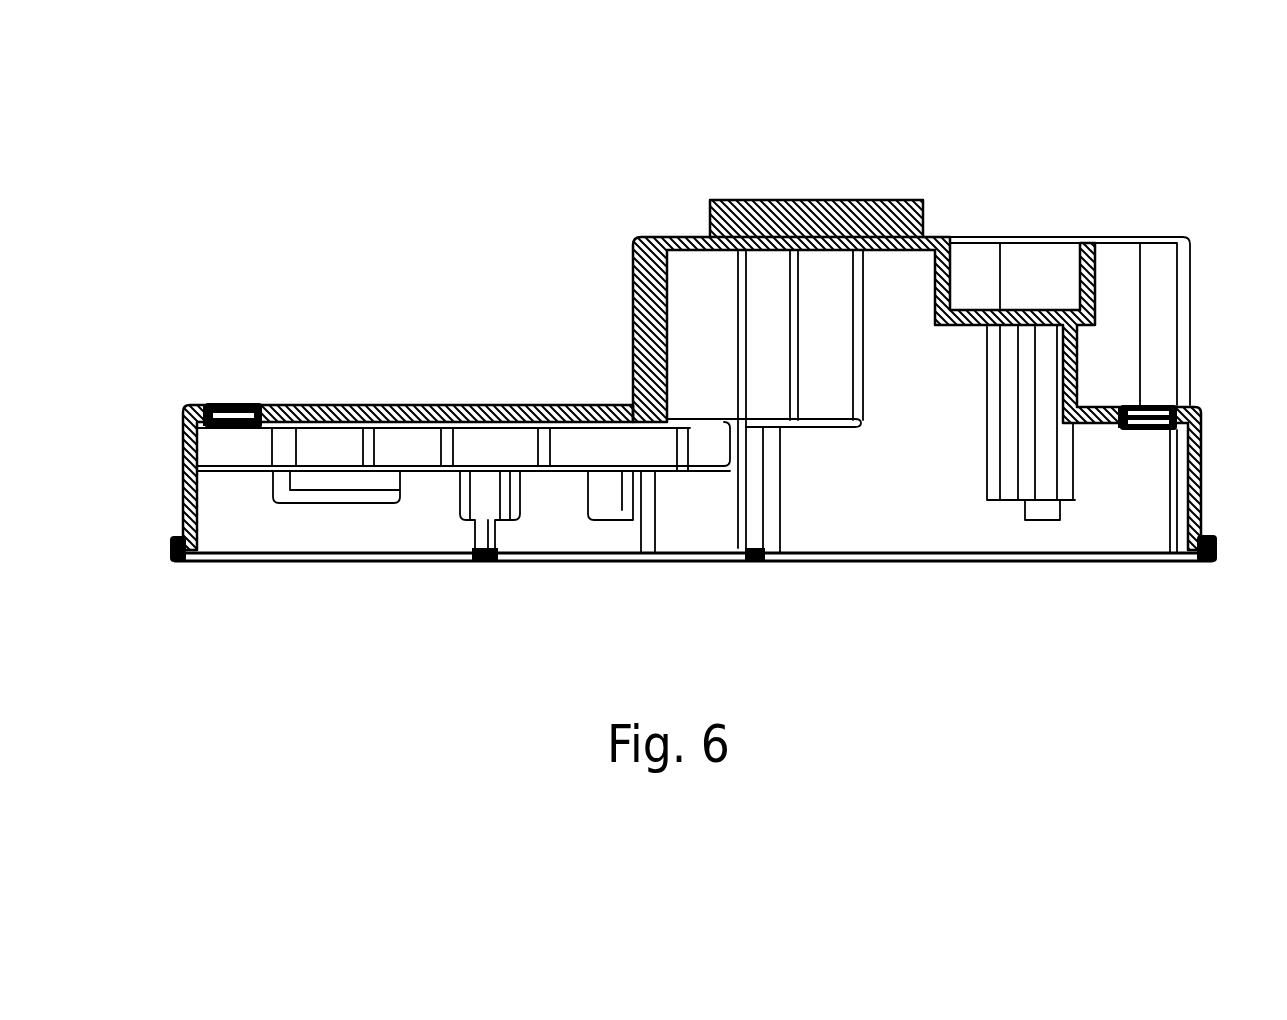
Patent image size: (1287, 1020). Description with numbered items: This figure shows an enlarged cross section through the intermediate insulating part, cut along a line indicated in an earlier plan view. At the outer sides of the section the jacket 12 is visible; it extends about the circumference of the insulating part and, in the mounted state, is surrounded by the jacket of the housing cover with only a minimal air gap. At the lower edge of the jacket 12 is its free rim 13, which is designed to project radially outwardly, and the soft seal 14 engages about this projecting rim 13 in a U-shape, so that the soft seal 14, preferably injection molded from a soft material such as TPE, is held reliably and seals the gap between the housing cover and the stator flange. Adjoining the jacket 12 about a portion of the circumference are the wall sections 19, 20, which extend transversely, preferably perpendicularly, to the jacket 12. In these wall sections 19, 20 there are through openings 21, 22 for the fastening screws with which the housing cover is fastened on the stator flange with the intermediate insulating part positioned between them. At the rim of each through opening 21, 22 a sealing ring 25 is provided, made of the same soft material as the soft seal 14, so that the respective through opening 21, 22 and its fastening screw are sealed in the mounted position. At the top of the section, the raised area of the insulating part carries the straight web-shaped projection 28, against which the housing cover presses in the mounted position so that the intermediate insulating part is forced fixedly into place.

The jacket 12 is at (1193, 463).
The free rim 13 is at (1185, 556).
The soft seal 14 is at (1218, 547).
The wall section 19 is at (317, 410).
The wall section 20 is at (1100, 403).
The through opening 21 is at (243, 400).
The through opening 22 is at (1157, 403).
The sealing ring 25 is at (215, 398).
The projection 28 is at (773, 212).